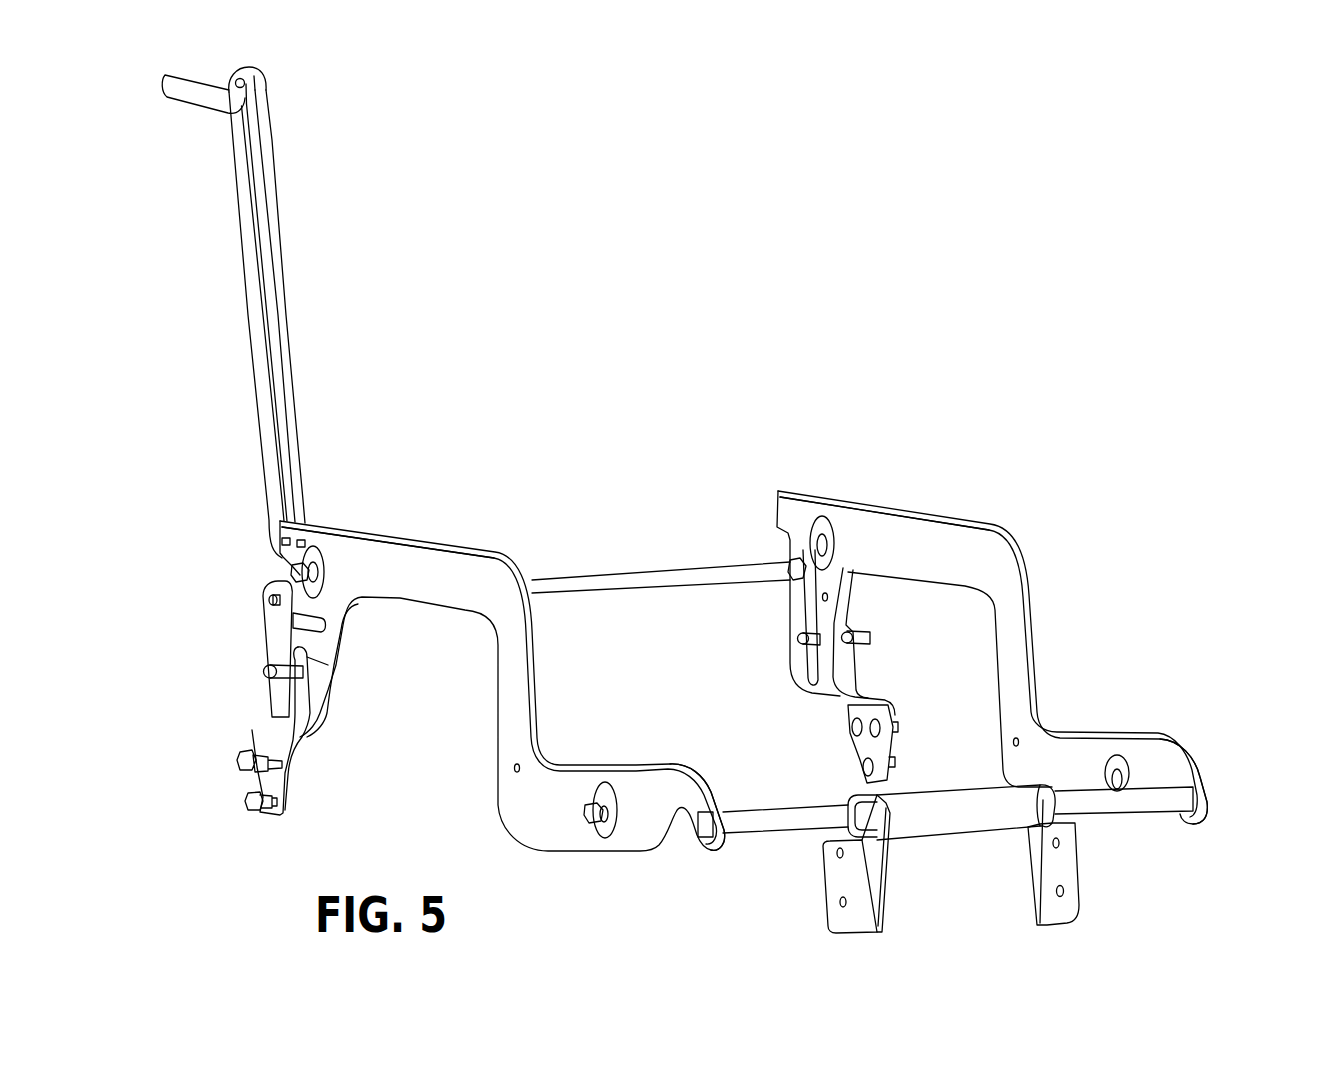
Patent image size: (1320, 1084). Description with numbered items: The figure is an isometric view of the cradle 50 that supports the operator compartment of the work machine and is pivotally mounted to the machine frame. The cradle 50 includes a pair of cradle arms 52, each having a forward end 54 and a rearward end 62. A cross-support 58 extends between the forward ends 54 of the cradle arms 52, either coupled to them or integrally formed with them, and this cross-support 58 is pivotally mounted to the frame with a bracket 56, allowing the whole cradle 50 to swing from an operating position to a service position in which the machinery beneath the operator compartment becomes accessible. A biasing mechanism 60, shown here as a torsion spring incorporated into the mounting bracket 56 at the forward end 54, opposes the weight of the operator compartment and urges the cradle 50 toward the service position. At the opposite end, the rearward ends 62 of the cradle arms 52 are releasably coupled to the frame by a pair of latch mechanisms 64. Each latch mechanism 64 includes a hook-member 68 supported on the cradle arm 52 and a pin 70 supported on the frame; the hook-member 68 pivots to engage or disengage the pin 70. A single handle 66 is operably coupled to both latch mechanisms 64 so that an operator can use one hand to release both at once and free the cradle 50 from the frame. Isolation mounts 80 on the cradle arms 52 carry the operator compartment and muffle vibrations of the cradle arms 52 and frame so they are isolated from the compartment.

The cradle 50 is at (970, 366).
The cradle arms 52 is at (540, 687).
The forward end 54 is at (715, 797).
The bracket 56 is at (924, 896).
The cross-support 58 is at (808, 822).
The biasing mechanism 60 is at (923, 805).
The rearward end 62 is at (333, 520).
The latch mechanisms 64 is at (238, 706).
The handle 66 is at (245, 297).
The hook-member 68 is at (268, 628).
The pin 70 is at (268, 673).
The isolation mounts 80 is at (290, 573).